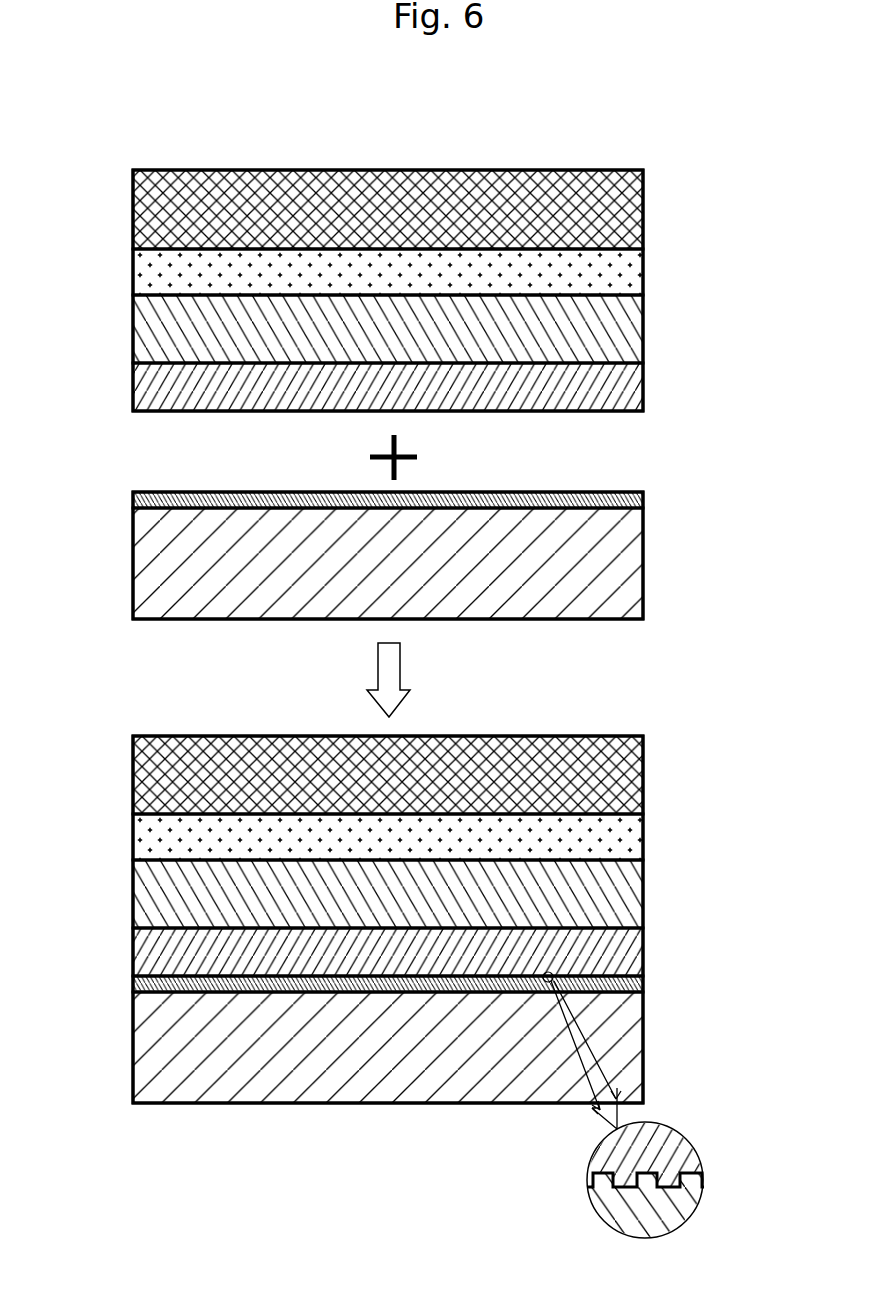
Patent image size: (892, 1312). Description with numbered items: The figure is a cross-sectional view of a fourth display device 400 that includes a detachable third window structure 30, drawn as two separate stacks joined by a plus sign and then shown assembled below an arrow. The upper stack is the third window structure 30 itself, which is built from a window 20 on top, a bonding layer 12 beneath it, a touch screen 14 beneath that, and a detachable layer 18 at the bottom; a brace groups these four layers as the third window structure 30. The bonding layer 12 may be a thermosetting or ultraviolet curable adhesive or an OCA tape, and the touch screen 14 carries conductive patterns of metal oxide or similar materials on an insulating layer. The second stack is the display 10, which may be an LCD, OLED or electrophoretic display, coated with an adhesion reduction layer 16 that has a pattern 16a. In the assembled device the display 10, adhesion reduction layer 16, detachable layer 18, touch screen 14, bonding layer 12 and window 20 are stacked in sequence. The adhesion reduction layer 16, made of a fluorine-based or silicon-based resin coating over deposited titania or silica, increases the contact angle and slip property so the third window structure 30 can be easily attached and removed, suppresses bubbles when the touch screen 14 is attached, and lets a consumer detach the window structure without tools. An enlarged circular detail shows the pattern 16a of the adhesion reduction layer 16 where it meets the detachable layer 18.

The fourth display device 400 is at (157, 107).
The third window structure 30 is at (705, 200).
The window 20 is at (640, 210).
The bonding layer 12 is at (640, 276).
The touch screen 14 is at (640, 332).
The detachable layer 18 is at (640, 384).
The adhesion reduction layer 16 is at (640, 503).
The pattern 16a is at (697, 1175).
The display 10 is at (640, 562).